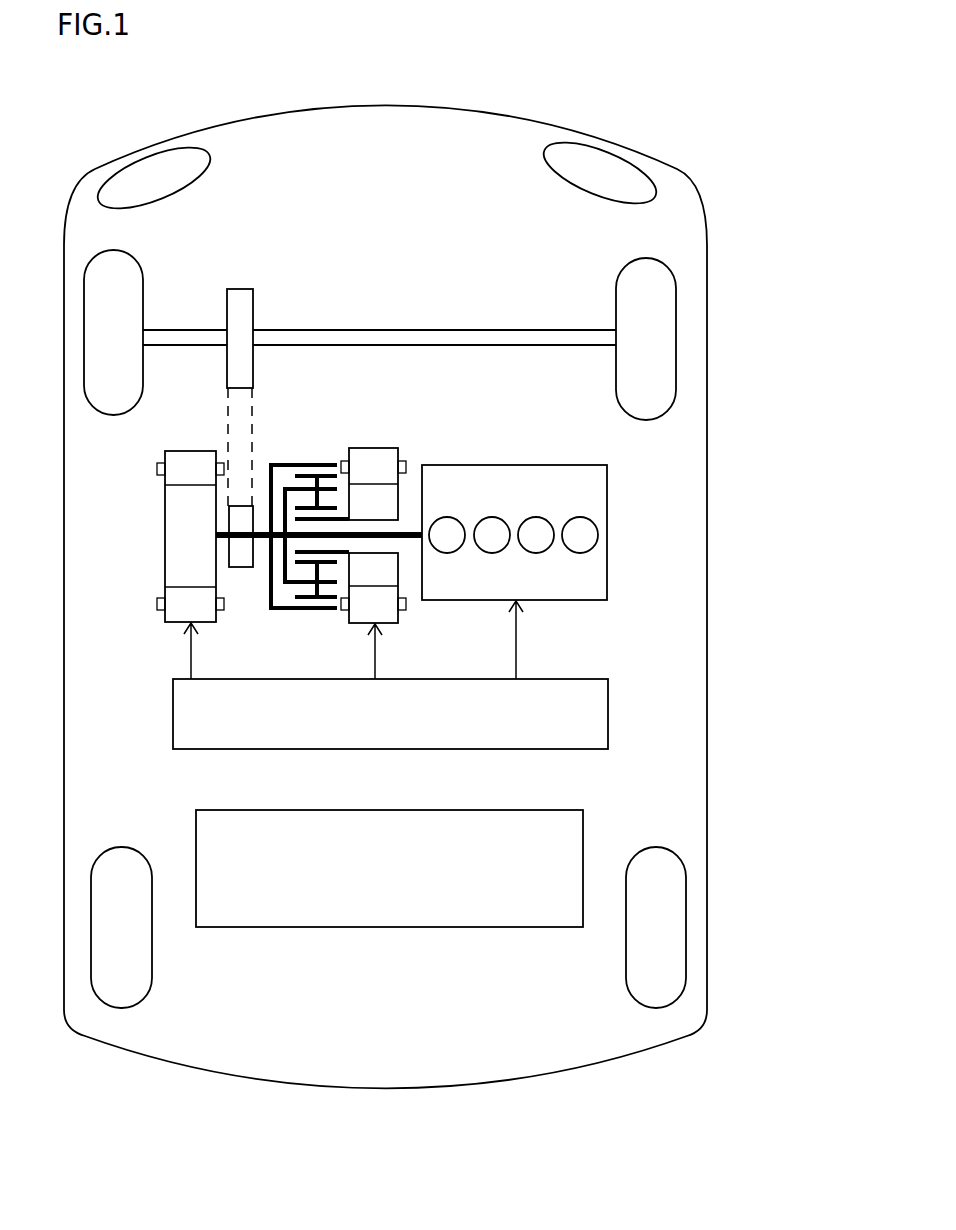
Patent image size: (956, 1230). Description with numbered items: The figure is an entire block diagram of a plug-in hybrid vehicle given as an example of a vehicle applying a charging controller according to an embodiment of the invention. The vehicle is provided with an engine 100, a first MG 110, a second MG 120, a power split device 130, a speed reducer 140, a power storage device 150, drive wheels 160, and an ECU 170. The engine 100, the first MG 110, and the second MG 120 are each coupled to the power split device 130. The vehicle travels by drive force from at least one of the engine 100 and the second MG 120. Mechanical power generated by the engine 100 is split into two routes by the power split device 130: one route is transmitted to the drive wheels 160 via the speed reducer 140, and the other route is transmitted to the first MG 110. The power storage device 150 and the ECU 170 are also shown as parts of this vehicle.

The engine 100 is at (484, 465).
The first MG 110 is at (376, 448).
The second MG 120 is at (165, 530).
The power split device 130 is at (300, 463).
The speed reducer 140 is at (246, 262).
The power storage device 150 is at (377, 927).
The drive wheels 160 is at (83, 324).
The ECU 170 is at (173, 707).